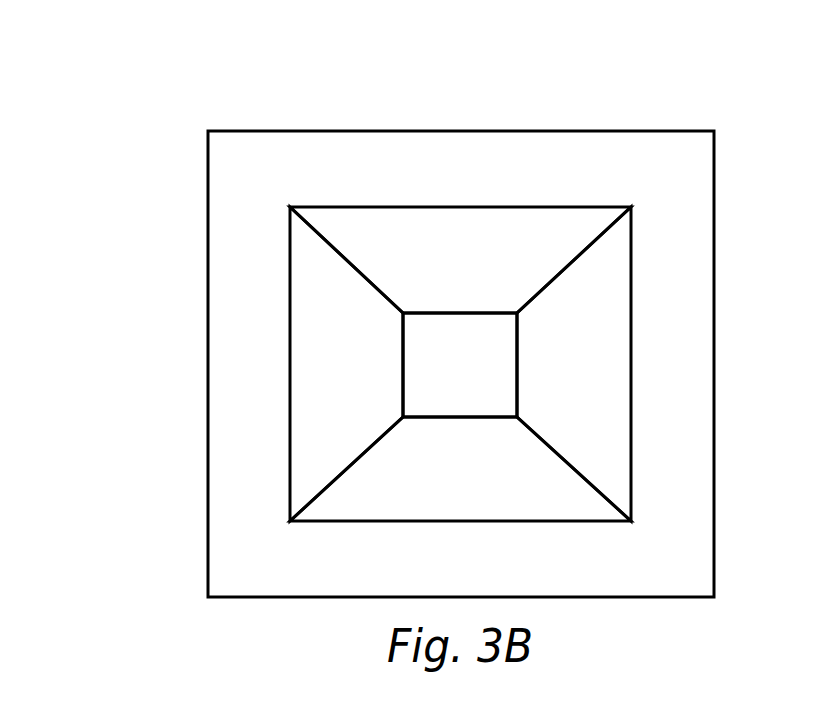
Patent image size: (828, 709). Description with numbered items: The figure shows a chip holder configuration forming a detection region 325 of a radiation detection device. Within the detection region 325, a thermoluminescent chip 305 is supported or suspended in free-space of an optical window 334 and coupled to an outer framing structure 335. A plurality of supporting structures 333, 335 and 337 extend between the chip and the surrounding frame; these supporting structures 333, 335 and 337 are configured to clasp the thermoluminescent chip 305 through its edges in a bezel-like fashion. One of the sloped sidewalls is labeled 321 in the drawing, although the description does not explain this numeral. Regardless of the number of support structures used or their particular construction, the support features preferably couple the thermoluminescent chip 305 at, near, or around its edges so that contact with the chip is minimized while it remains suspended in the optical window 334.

The detection region 325 is at (163, 86).
The outer framing structure 335 is at (667, 202).
The supporting structure 333 is at (334, 249).
The top sloped sidewall 321 is at (573, 258).
The optical window 334 is at (583, 415).
The supporting structure 337 is at (572, 470).
The thermoluminescent chip 305 is at (460, 365).